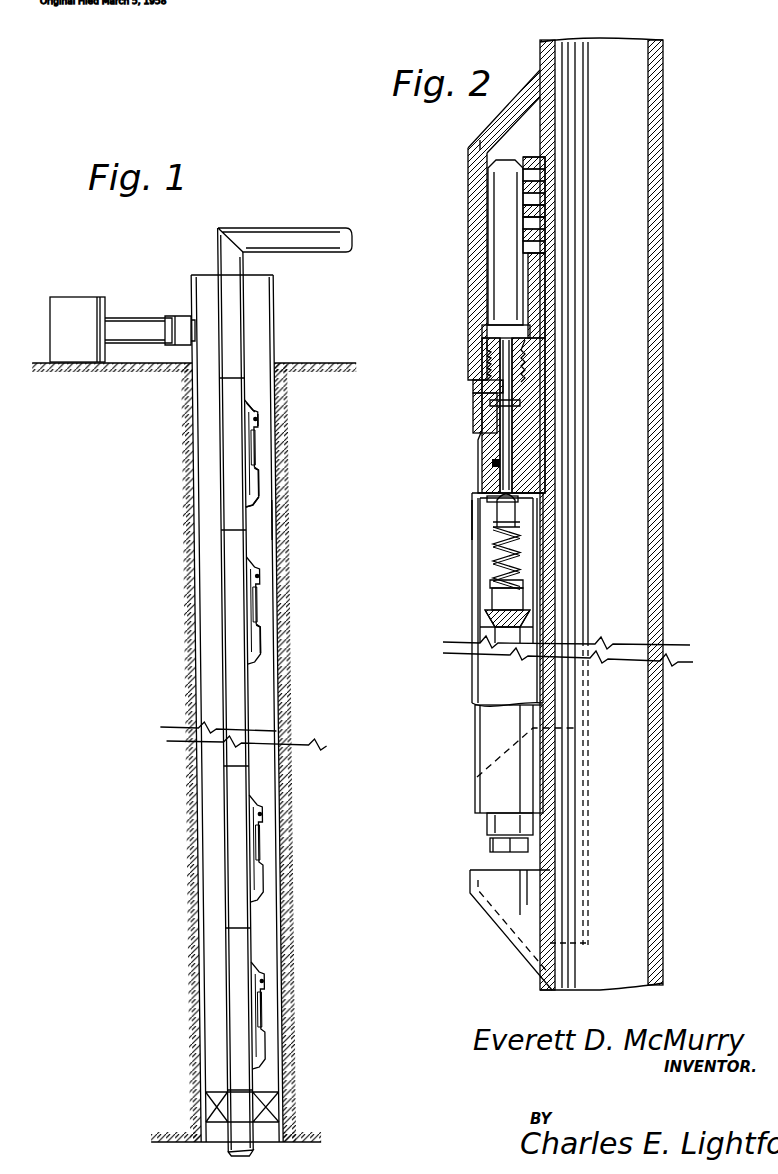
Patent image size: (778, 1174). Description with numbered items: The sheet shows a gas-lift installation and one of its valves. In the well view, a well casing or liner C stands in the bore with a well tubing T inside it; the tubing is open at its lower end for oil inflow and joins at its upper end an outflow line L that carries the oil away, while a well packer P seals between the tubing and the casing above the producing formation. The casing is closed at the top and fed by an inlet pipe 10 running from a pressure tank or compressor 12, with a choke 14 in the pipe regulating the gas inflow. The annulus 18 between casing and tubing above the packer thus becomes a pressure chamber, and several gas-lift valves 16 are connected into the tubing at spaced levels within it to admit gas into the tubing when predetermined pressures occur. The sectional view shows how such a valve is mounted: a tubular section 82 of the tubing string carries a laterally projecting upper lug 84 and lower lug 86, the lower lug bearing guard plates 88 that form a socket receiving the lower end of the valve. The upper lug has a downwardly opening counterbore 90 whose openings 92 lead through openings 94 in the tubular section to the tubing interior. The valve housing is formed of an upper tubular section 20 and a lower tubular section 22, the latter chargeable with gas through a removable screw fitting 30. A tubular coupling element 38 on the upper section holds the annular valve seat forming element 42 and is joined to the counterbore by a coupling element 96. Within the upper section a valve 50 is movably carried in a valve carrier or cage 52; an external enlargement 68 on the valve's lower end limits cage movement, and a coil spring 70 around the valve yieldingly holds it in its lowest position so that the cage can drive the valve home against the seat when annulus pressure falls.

In FIG. 1, the inlet pipe 10 is at (142, 318).
In FIG. 1, the pressure tank or compressor 12 is at (60, 300).
In FIG. 1, the choke 14 is at (183, 338).
In FIG. 1, the gas-lift valve 16 is at (256, 440).
In FIG. 1, the annulus 18 is at (265, 524).
In FIG. 2, the annulus 18 is at (472, 522).
In FIG. 2, the upper tubular section 20 is at (493, 556).
In FIG. 2, the lower tubular section 22 is at (472, 695).
In FIG. 2, the screw fitting 30 is at (490, 845).
In FIG. 2, the tubular coupling element 38 is at (480, 455).
In FIG. 2, the annular valve seat forming element 42 is at (492, 463).
In FIG. 2, the valve 50 is at (497, 512).
In FIG. 2, the valve carrier or cage 52 is at (493, 528).
In FIG. 2, the external enlargement 68 is at (492, 600).
In FIG. 2, the coil spring 70 is at (490, 582).
In FIG. 2, the tubular section 82 is at (662, 235).
In FIG. 1, the upper lug 84 is at (258, 412).
In FIG. 2, the upper lug 84 is at (468, 160).
In FIG. 1, the lower lug 86 is at (258, 492).
In FIG. 2, the lower lug 86 is at (490, 908).
In FIG. 1, the guard plates 88 is at (258, 470).
In FIG. 2, the guard plates 88 is at (510, 928).
In FIG. 2, the counterbore 90 is at (488, 252).
In FIG. 2, the openings 92 is at (523, 212).
In FIG. 2, the openings 94 is at (548, 190).
In FIG. 2, the coupling element 96 is at (478, 402).
In FIG. 1, the well casing or liner C is at (191, 482).
In FIG. 1, the well tubing T is at (243, 310).
In FIG. 1, the outflow line L is at (306, 228).
In FIG. 1, the well packer P is at (280, 1110).